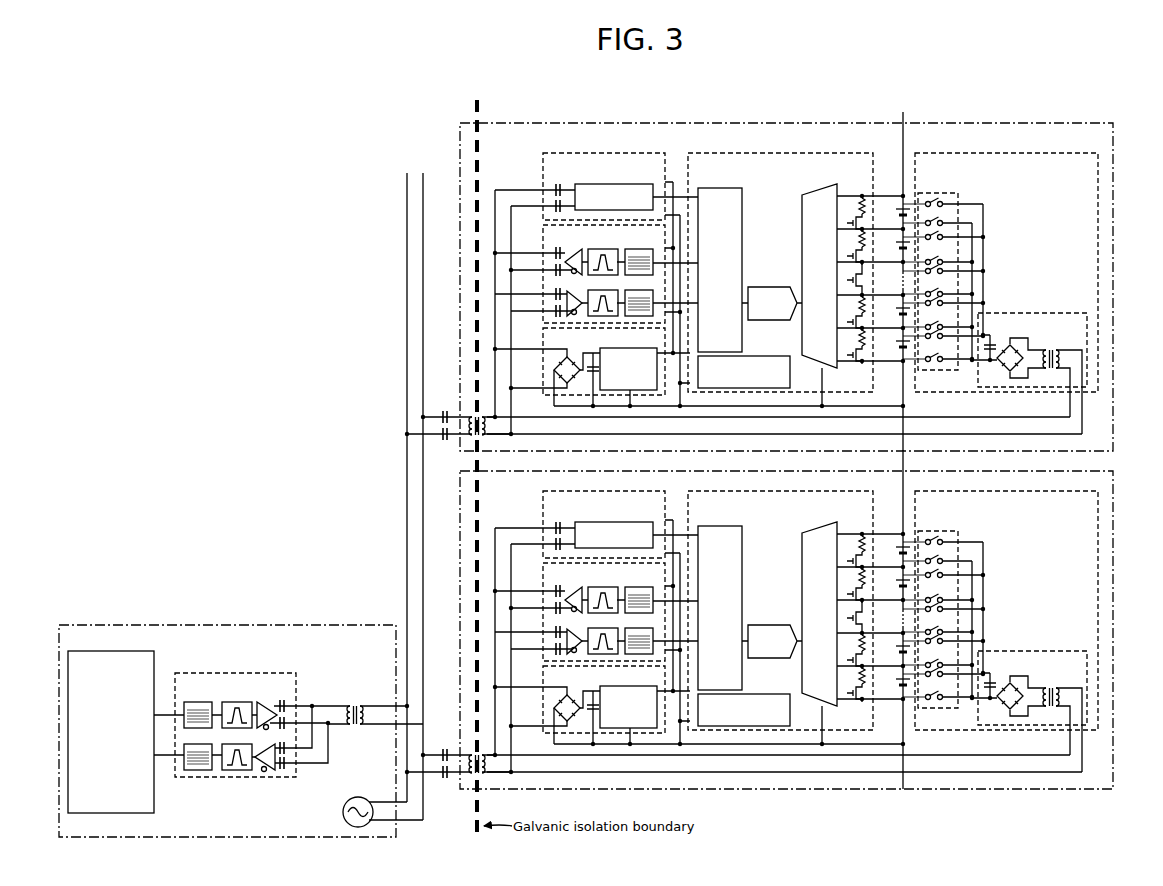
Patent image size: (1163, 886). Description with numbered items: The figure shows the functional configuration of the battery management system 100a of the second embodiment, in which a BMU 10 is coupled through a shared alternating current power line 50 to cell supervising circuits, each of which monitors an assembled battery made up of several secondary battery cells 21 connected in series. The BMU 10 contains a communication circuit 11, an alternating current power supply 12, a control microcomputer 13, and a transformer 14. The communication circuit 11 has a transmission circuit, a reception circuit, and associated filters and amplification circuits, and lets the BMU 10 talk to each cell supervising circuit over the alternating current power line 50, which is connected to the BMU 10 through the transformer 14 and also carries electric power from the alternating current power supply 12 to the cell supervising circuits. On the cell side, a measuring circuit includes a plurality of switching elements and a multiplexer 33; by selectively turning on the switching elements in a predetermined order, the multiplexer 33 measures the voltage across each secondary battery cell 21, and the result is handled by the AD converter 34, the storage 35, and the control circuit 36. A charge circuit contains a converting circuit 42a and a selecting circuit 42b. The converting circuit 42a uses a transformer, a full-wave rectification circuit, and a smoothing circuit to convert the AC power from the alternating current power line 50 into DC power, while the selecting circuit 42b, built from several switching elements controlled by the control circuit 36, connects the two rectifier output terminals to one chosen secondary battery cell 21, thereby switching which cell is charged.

The BMS 100a is at (1079, 112).
The multiplexer 33 is at (802, 225).
The AD converter 34 is at (772, 287).
The storage 35 is at (760, 356).
The control circuit 36 is at (742, 190).
The converting circuit 42a is at (1035, 313).
The selecting circuit 42b is at (948, 196).
The secondary battery cell 21 is at (897, 352).
The alternating current power line 50 is at (423, 471).
The BMU 10 is at (320, 625).
The communication circuit 11 is at (200, 673).
The alternating current power supply 12 is at (354, 797).
The control microcomputer 13 is at (110, 651).
The transformer 14 is at (353, 701).